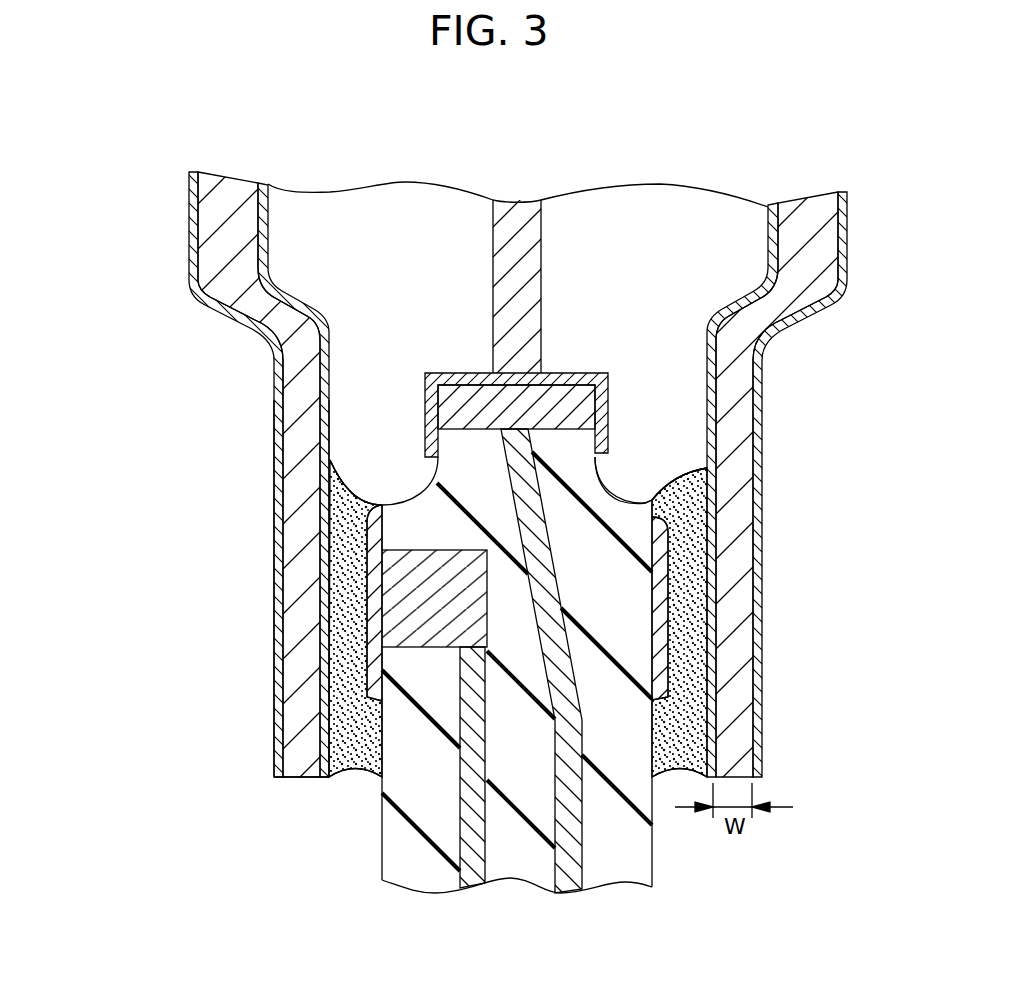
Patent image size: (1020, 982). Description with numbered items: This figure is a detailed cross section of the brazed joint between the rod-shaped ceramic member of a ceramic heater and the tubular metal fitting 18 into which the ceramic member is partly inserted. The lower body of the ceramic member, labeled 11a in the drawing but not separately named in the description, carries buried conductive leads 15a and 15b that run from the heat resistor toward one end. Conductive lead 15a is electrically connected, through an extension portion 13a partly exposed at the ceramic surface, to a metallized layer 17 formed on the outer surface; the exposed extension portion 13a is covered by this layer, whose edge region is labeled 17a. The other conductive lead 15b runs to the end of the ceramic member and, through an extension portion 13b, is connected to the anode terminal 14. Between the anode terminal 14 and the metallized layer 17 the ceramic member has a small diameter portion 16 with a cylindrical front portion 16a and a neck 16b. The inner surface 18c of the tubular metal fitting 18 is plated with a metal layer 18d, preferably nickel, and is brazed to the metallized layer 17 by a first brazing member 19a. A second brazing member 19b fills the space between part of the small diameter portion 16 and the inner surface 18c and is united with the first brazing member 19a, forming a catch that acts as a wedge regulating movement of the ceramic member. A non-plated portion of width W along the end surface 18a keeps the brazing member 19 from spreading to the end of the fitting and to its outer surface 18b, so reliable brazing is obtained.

The housing body 11a is at (627, 856).
The extension portion 13a is at (415, 650).
The extension portion 13b is at (463, 405).
The anode terminal 14 is at (547, 373).
The conductive lead 15a is at (480, 882).
The conductive lead 15b is at (568, 880).
The small diameter portion 16 is at (385, 478).
The cylindrical front portion 16a is at (575, 453).
The neck 16b is at (672, 480).
The metallized layer 17 is at (405, 590).
The seal lip 17a is at (368, 700).
The tubular metal fitting 18 is at (240, 192).
The end surface 18a is at (300, 767).
The outer surface 18b is at (274, 745).
The inner surface 18c is at (325, 541).
The metal layer 18d is at (236, 324).
The brazing member 19 is at (67, 473).
The first brazing member 19a is at (345, 637).
The second brazing member 19b is at (350, 502).